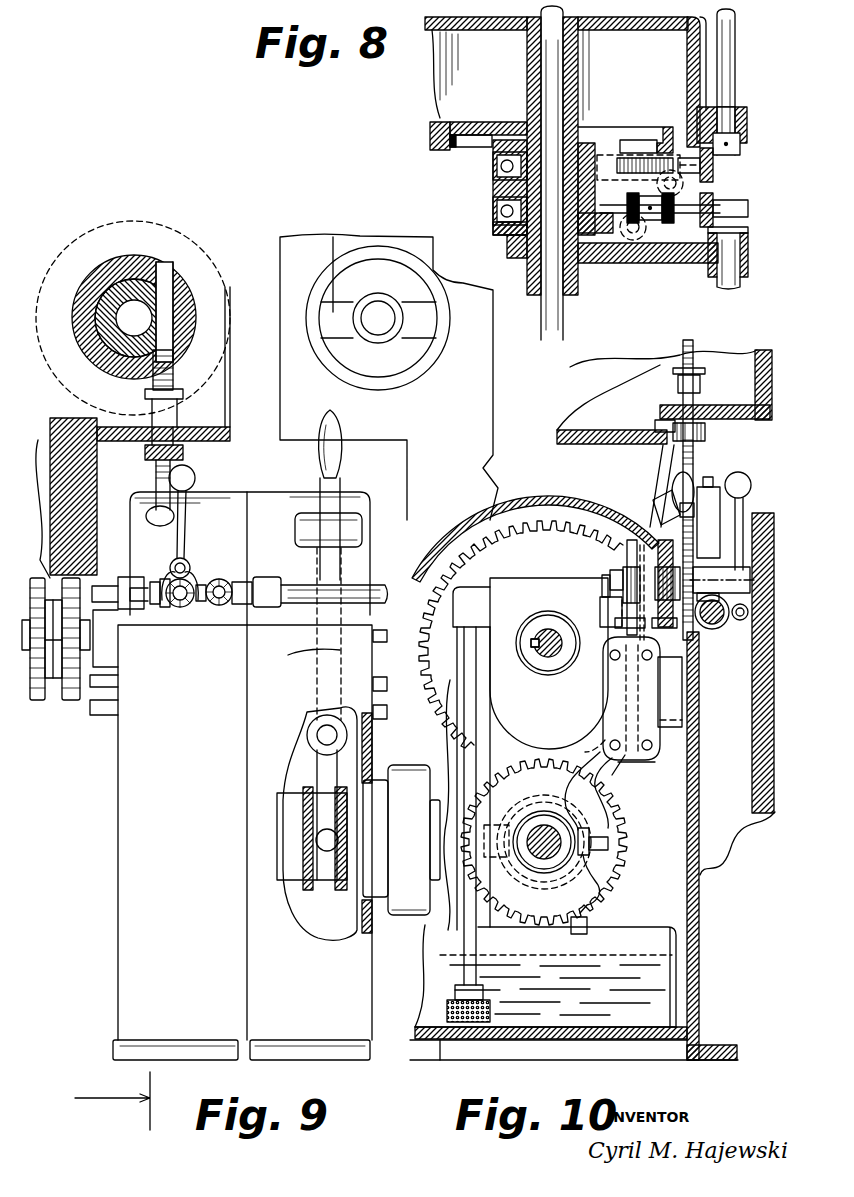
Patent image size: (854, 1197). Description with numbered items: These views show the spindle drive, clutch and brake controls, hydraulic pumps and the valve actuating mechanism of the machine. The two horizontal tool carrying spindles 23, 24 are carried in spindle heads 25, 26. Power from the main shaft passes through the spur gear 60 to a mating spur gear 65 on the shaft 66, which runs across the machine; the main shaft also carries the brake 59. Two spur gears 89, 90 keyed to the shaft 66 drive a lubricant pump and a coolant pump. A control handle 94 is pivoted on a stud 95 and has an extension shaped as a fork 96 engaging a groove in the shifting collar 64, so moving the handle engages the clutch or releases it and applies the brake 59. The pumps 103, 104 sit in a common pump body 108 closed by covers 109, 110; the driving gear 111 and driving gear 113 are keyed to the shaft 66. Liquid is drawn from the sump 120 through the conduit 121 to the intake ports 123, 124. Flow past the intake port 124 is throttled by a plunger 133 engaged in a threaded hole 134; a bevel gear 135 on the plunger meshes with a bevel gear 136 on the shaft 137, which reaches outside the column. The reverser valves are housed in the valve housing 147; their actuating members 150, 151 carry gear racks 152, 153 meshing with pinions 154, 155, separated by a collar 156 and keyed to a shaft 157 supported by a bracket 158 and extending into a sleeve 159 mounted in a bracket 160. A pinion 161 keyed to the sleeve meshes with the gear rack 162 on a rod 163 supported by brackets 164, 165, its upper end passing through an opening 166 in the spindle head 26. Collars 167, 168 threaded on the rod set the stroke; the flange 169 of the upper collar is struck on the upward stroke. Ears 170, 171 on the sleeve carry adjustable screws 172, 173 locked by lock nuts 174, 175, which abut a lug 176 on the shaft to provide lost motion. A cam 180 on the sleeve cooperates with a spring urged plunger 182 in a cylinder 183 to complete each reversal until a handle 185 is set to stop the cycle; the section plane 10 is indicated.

In FIG. 9, the section line / lathe 10 is at (157, 323).
In FIG. 9, the tool carrying spindle 23 is at (333, 240).
In FIG. 9, the tool carrying spindle 24 is at (157, 290).
In FIG. 9, the spindle head 25 is at (300, 345).
In FIG. 9, the spindle head 26 is at (205, 382).
In FIG. 10, the spindle head 26 is at (765, 362).
In FIG. 9, the brake 59 is at (405, 905).
In FIG. 10, the spur gear 60 is at (552, 905).
In FIG. 9, the shifting collar 64 is at (318, 900).
In FIG. 10, the shifting collar 64 is at (590, 855).
In FIG. 8, the spur gear 65 is at (437, 131).
In FIG. 10, the spur gear 65 is at (546, 508).
In FIG. 8, the shaft 66 is at (552, 328).
In FIG. 9, the shaft 66 is at (310, 655).
In FIG. 10, the shaft 66 is at (540, 652).
In FIG. 9, the spur gear 89 is at (37, 702).
In FIG. 9, the spur gear 90 is at (70, 702).
In FIG. 9, the control handle 94 is at (340, 457).
In FIG. 10, the control handle 94 is at (665, 452).
In FIG. 9, the stud 95 is at (322, 735).
In FIG. 10, the stud 95 is at (585, 735).
In FIG. 9, the fork 96 is at (322, 790).
In FIG. 10, the fork 96 is at (592, 805).
In FIG. 8, the pump 103 is at (470, 169).
In FIG. 8, the pump 104 is at (470, 213).
In FIG. 8, the pump body 108 is at (505, 184).
In FIG. 10, the pump body 108 is at (506, 590).
In FIG. 8, the cover 109 is at (505, 143).
In FIG. 8, the cover 110 is at (505, 228).
In FIG. 8, the driving gear 111 is at (585, 138).
In FIG. 8, the driving gear 113 is at (578, 262).
In FIG. 10, the sump 120 is at (610, 1030).
In FIG. 10, the conduit 121 is at (478, 992).
In FIG. 8, the intake port 123 is at (640, 236).
In FIG. 8, the intake port 124 is at (618, 168).
In FIG. 8, the plunger 133 is at (670, 172).
In FIG. 8, the threaded hole 134 is at (640, 178).
In FIG. 8, the bevel gear 135 is at (713, 185).
In FIG. 8, the bevel gear 136 is at (718, 160).
In FIG. 8, the shaft 137 is at (730, 62).
In FIG. 10, the valve housing 147 is at (633, 773).
In FIG. 9, the reverser valve actuating member 150 is at (152, 462).
In FIG. 10, the reverser valve actuating member 150 is at (655, 630).
In FIG. 10, the reverser valve actuating member 151 is at (628, 555).
In FIG. 10, the gear rack 152 is at (665, 560).
In FIG. 10, the gear rack 153 is at (605, 605).
In FIG. 10, the pinion 154 is at (657, 575).
In FIG. 10, the pinion 155 is at (612, 572).
In FIG. 10, the collar 156 is at (625, 582).
In FIG. 9, the shaft 157 is at (185, 558).
In FIG. 10, the shaft 157 is at (605, 588).
In FIG. 10, the bracket 158 is at (606, 655).
In FIG. 9, the sleeve 159 is at (163, 577).
In FIG. 10, the sleeve 159 is at (722, 622).
In FIG. 10, the bracket 160 is at (760, 590).
In FIG. 10, the pinion 161 is at (710, 589).
In FIG. 10, the gear rack 162 is at (705, 525).
In FIG. 10, the rod 163 is at (690, 482).
In FIG. 10, the bracket 164 is at (665, 480).
In FIG. 10, the bracket 165 is at (736, 622).
In FIG. 10, the opening 166 is at (658, 438).
In FIG. 10, the collar 167 is at (700, 383).
In FIG. 10, the collar 168 is at (705, 430).
In FIG. 10, the flange 169 is at (675, 372).
In FIG. 9, the ear 170 is at (165, 610).
In FIG. 9, the ear 171 is at (203, 606).
In FIG. 9, the adjustable screw 172 is at (130, 590).
In FIG. 9, the adjustable screw 173 is at (220, 610).
In FIG. 9, the lock nut 174 is at (155, 606).
In FIG. 9, the lock nut 175 is at (210, 580).
In FIG. 9, the lug 176 is at (182, 608).
In FIG. 10, the cam 180 is at (745, 567).
In FIG. 10, the spring urged plunger 182 is at (708, 480).
In FIG. 10, the cylinder 183 is at (740, 505).
In FIG. 9, the handle 185 is at (194, 478).
In FIG. 10, the handle 185 is at (750, 484).